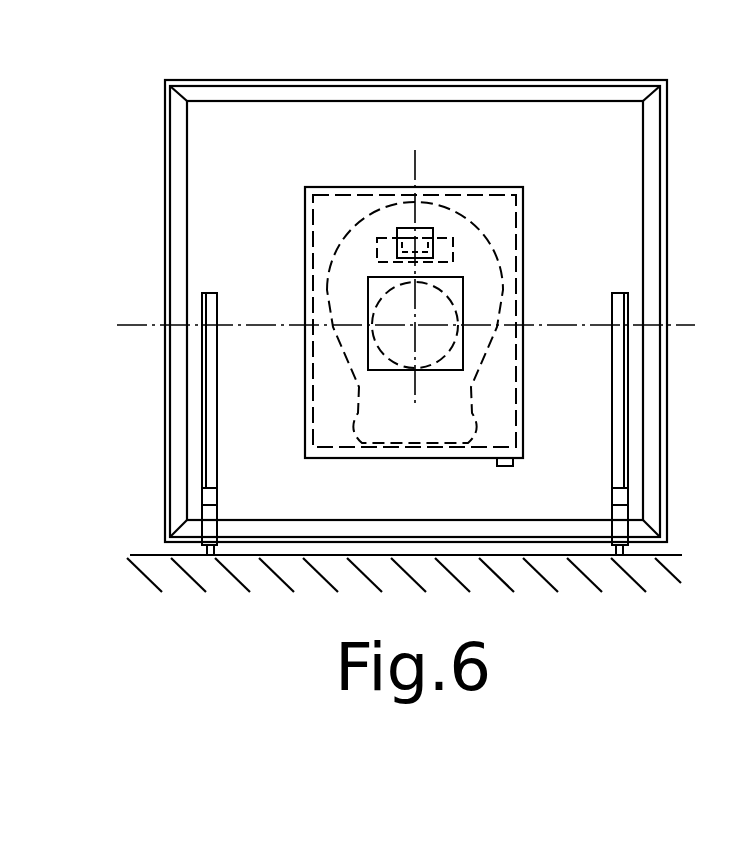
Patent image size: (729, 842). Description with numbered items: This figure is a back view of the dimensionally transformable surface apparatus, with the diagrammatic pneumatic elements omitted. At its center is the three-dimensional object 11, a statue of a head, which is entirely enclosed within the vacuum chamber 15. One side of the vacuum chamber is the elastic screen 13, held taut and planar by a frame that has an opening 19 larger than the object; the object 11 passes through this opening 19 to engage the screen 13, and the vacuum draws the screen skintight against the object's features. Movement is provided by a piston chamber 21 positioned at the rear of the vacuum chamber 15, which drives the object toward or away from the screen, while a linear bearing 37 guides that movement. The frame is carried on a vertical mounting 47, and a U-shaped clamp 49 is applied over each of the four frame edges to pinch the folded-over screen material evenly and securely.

The three-dimensional object 11 is at (388, 423).
The elastic screen 13 is at (270, 306).
The vacuum chamber 15 is at (522, 205).
The opening 19 is at (513, 424).
The piston chamber 21 is at (452, 293).
The linear bearing 37 is at (445, 220).
The vertical mounting 47 is at (213, 471).
The U-shaped clamp 49 is at (525, 90).